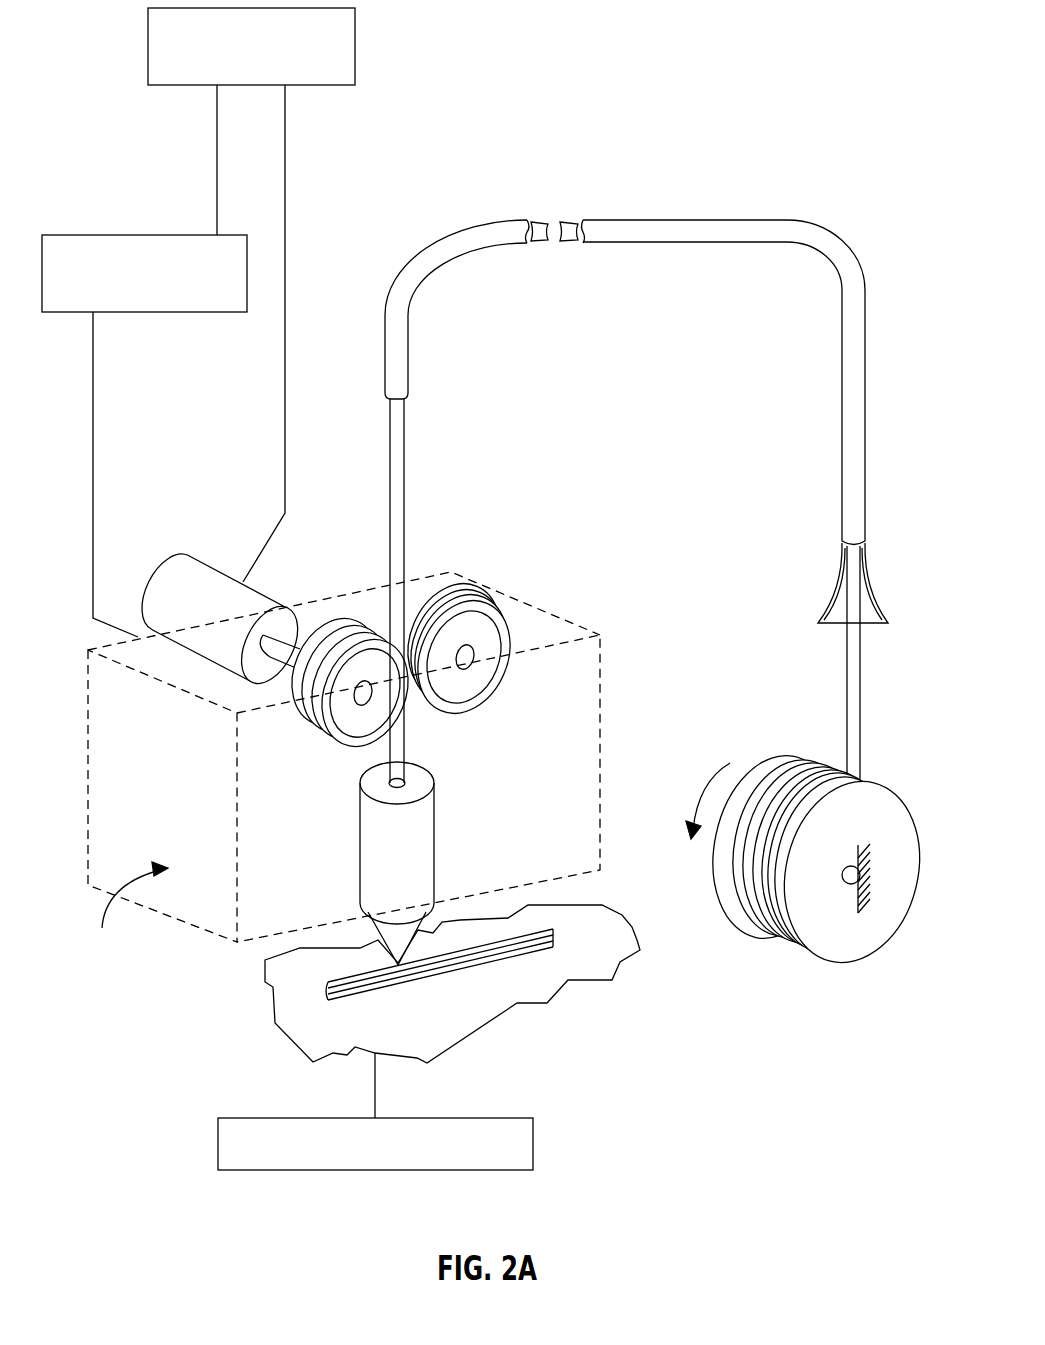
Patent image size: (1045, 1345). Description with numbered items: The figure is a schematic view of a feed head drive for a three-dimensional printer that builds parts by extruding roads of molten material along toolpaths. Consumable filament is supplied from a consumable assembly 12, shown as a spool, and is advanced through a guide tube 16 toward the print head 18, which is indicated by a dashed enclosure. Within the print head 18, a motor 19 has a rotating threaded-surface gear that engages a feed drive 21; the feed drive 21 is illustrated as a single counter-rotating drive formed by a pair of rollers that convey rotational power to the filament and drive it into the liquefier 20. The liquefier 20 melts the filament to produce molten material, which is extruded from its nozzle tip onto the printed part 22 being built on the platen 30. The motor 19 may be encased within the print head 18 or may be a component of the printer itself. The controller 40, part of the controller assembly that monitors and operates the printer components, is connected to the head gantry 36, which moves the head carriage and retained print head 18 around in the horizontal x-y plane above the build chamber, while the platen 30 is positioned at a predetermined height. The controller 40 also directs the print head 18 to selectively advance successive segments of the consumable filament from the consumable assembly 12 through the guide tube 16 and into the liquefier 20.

The consumable assembly 12 is at (820, 942).
The guide tube 16 is at (866, 457).
The print head 18 is at (344, 766).
The motor 19 is at (186, 578).
The liquefier 20 is at (421, 835).
The feed drive 21 is at (318, 722).
The 3D part 22 is at (275, 1023).
The platen 30 is at (492, 1118).
The head gantry 36 is at (110, 235).
The controller 40 is at (357, 40).